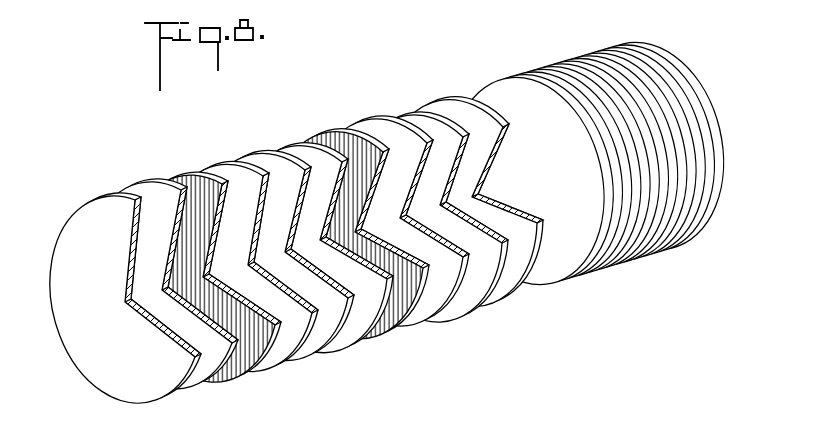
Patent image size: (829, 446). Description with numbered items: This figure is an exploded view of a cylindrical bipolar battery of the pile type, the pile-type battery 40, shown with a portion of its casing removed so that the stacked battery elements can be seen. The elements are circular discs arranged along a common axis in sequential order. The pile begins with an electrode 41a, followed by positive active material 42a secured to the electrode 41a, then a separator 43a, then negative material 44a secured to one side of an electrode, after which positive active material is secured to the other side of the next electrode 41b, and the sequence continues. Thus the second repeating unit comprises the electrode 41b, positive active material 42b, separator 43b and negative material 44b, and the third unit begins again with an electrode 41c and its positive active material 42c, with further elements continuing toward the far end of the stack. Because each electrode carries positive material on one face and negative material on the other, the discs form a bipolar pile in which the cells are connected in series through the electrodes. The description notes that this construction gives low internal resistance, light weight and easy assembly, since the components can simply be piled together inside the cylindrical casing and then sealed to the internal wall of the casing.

The pile-type battery 40 is at (707, 60).
The electrode 41a is at (75, 213).
The positive active material 42a is at (137, 185).
The separator 43a is at (175, 175).
The negative material 44a is at (210, 160).
The electrode 41b is at (249, 150).
The positive active material 42b is at (295, 142).
The separator 43b is at (331, 130).
The negative material 44b is at (369, 118).
The electrode 41c is at (412, 103).
The positive active material 42c is at (451, 98).